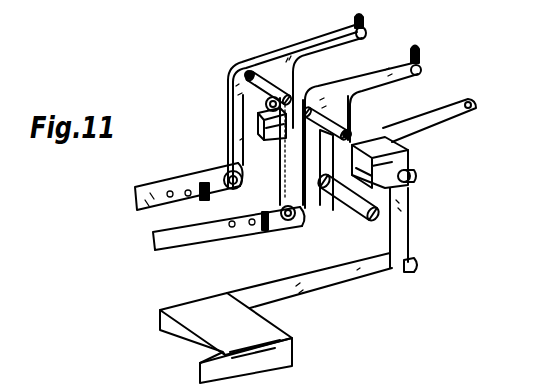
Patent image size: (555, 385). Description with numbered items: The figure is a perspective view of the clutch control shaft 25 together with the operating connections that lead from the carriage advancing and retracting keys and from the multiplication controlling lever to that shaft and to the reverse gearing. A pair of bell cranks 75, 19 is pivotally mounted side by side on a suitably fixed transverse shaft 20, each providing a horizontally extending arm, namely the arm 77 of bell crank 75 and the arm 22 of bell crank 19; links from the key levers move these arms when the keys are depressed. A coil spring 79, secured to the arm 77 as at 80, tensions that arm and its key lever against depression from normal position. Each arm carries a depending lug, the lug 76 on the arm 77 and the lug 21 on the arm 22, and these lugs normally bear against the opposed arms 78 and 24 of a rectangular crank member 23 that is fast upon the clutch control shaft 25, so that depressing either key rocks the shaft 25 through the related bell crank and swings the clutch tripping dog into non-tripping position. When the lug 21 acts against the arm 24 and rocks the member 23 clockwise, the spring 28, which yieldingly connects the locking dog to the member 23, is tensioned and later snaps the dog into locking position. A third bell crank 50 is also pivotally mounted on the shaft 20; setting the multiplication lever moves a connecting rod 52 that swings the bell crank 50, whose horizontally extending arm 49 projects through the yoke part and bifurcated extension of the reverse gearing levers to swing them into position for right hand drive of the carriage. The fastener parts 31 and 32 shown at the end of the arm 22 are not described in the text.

The bell crank 19 is at (262, 193).
The transverse shaft 20 is at (262, 76).
The depending lug 21 is at (390, 150).
The horizontally extending arm 22 is at (360, 88).
The rectangular crank member 23 is at (375, 172).
The arm of crank member 24 is at (350, 129).
The clutch control shaft 25 is at (380, 212).
The spring 28 is at (282, 181).
The washer 31 is at (422, 72).
The bolt 32 is at (421, 57).
The horizontally extending arm 49 is at (422, 121).
The bell crank 50 is at (418, 176).
The connecting rod 52 is at (323, 290).
The bell crank 75 is at (262, 125).
The depending lug 76 is at (264, 103).
The horizontally extending arm 77 is at (320, 50).
The arm of crank member 78 is at (270, 130).
The coil spring 79 is at (354, 21).
The spring attachment point 80 is at (366, 40).